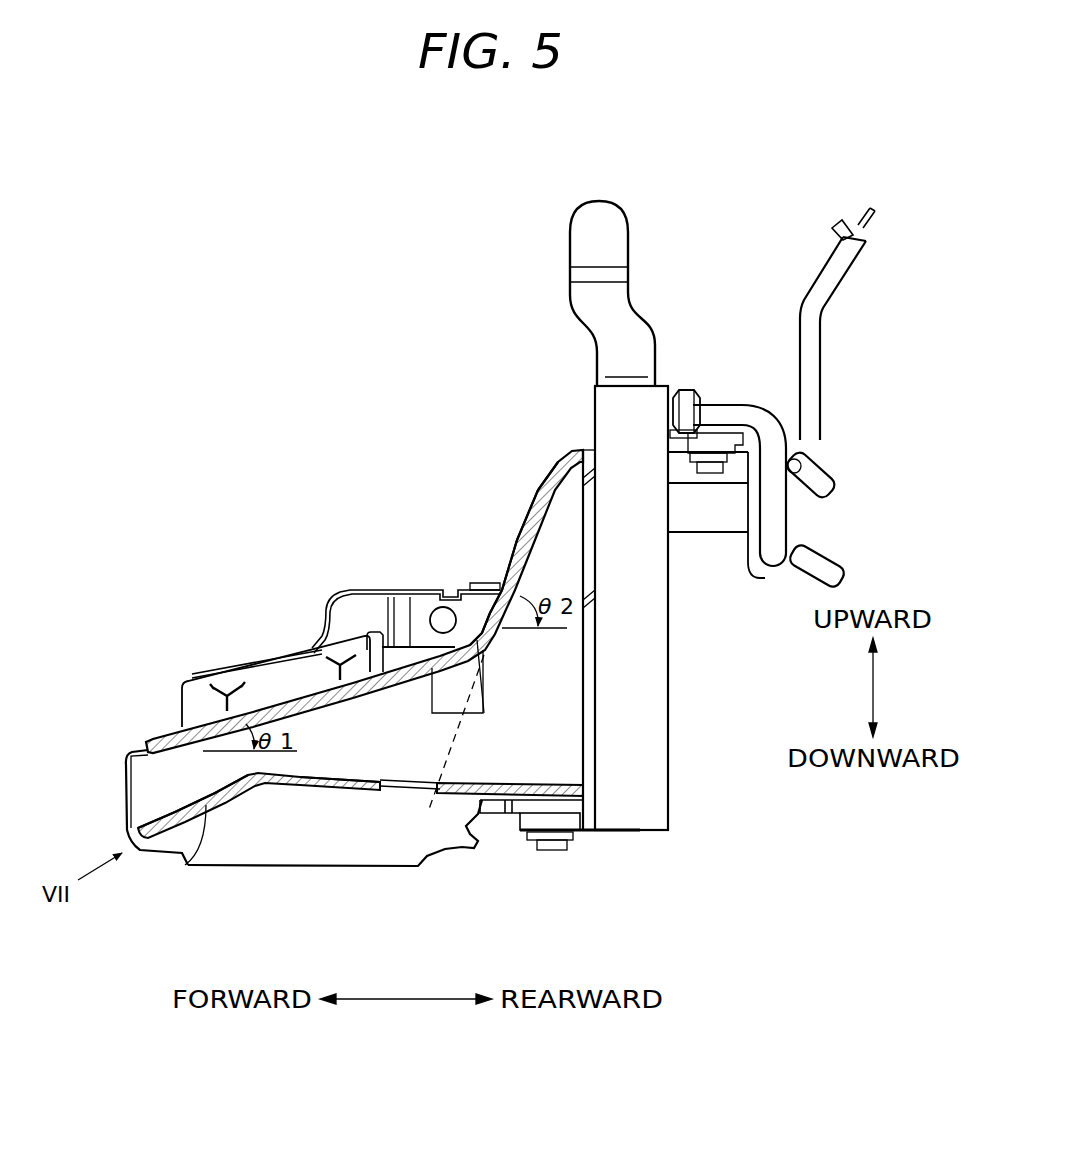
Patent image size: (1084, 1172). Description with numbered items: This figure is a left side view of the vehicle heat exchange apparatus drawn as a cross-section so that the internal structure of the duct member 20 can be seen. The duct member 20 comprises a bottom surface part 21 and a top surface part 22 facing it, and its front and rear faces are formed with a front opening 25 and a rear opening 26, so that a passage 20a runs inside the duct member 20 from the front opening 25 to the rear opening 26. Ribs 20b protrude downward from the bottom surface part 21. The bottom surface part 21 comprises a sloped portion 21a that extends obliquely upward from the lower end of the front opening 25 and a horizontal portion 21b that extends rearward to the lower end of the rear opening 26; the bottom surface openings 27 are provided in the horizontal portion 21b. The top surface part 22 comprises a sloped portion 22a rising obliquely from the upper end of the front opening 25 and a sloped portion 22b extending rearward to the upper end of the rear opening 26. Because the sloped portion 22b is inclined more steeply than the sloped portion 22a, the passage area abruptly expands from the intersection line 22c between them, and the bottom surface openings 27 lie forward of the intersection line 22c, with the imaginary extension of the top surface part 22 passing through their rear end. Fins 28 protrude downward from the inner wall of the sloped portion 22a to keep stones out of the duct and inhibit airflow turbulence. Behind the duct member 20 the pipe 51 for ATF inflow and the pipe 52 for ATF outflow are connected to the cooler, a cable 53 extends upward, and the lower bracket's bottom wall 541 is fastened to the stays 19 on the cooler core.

The stay 19 is at (585, 832).
The duct member 20 is at (530, 507).
The passage 20a is at (300, 733).
The rib 20b is at (238, 835).
The bottom surface part 21 is at (287, 787).
The sloped portion 21a is at (185, 865).
The horizontal portion 21b is at (348, 790).
The top surface part 22 is at (418, 657).
The sloped portion 22a is at (188, 712).
The sloped portion 22b is at (513, 548).
The intersection line 22c is at (480, 652).
The front opening 25 is at (127, 756).
The rear opening 26 is at (596, 672).
The bottom surface opening 27 is at (438, 797).
The fin 28 is at (440, 700).
The pipe 51 is at (776, 508).
The pipe 52 is at (808, 470).
The cable 53 is at (823, 343).
The bottom wall 541 is at (510, 817).